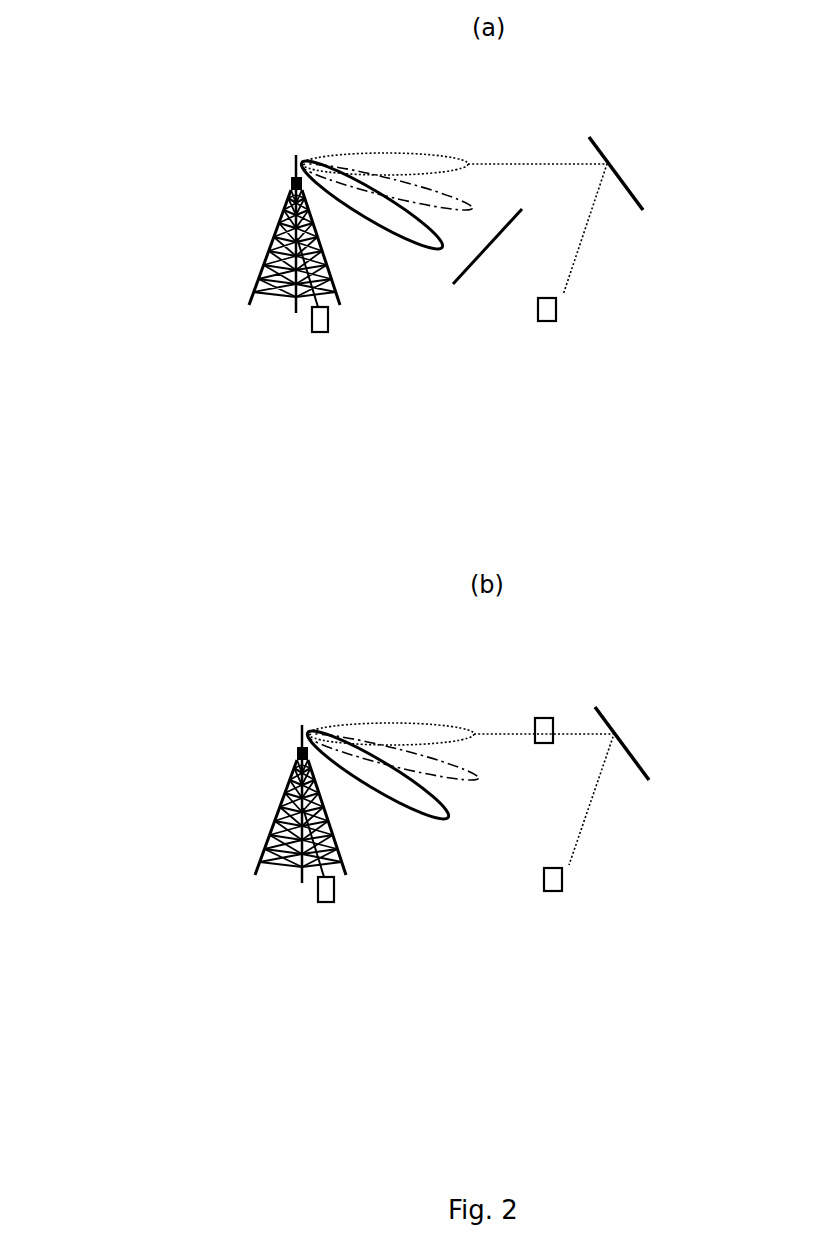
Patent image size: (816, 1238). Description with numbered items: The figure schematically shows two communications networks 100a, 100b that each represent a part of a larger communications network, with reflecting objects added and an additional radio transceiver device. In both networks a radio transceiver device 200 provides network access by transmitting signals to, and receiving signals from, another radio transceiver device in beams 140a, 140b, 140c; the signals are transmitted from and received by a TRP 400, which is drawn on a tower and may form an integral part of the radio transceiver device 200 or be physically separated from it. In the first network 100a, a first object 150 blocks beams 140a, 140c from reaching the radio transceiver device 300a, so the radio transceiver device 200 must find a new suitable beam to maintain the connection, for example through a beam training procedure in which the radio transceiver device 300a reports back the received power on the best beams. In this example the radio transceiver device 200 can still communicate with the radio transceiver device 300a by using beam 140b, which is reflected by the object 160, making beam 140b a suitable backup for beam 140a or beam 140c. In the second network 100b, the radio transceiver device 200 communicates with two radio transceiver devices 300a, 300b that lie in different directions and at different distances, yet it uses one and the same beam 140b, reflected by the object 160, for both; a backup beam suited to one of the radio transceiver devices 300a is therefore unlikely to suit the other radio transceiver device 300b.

The communications network 100a is at (188, 124).
The communications network 100b is at (186, 677).
The TRP 400 is at (294, 171).
The radio transceiver device 200 is at (312, 318).
The beam 140a is at (373, 219).
The beam 140b is at (386, 152).
The beam 140c is at (465, 208).
The first object 150 is at (455, 284).
The object 160 is at (633, 186).
The radio transceiver device 300a is at (556, 306).
The radio transceiver device 300b is at (551, 701).